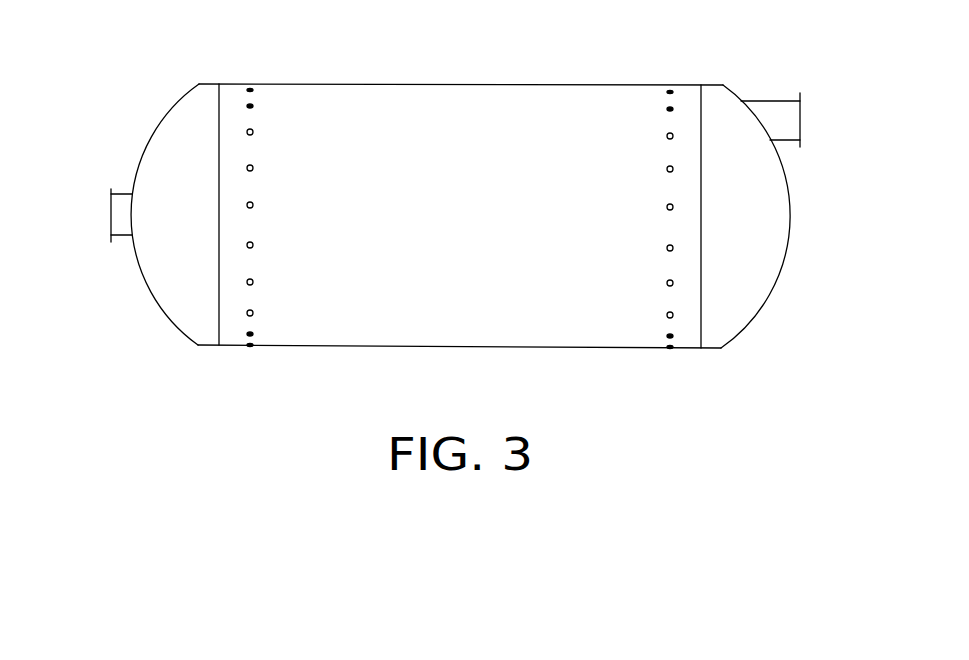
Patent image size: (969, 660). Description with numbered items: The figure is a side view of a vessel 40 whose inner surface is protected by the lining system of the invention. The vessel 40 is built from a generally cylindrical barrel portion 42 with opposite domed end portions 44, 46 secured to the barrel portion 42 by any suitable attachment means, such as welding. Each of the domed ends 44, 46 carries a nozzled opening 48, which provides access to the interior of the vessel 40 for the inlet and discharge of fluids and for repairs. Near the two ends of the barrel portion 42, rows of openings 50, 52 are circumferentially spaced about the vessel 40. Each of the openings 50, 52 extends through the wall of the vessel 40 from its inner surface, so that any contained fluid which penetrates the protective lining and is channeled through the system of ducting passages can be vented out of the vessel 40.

The vessel 40 is at (465, 241).
The barrel portion 42 is at (599, 118).
The domed end portion 44 is at (172, 142).
The domed end portion 46 is at (725, 108).
The nozzled openings 48 is at (110, 210).
The openings 50 is at (253, 204).
The openings 52 is at (667, 284).